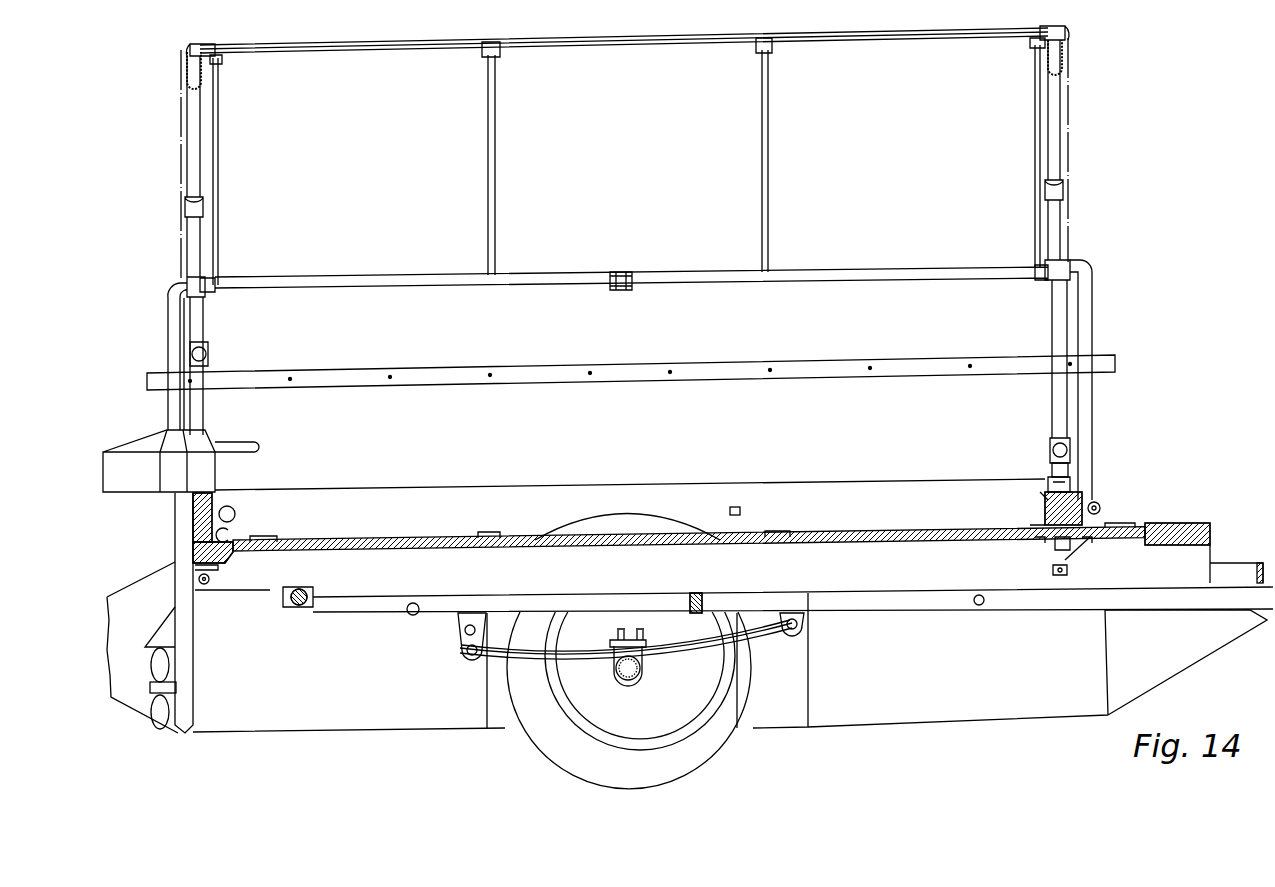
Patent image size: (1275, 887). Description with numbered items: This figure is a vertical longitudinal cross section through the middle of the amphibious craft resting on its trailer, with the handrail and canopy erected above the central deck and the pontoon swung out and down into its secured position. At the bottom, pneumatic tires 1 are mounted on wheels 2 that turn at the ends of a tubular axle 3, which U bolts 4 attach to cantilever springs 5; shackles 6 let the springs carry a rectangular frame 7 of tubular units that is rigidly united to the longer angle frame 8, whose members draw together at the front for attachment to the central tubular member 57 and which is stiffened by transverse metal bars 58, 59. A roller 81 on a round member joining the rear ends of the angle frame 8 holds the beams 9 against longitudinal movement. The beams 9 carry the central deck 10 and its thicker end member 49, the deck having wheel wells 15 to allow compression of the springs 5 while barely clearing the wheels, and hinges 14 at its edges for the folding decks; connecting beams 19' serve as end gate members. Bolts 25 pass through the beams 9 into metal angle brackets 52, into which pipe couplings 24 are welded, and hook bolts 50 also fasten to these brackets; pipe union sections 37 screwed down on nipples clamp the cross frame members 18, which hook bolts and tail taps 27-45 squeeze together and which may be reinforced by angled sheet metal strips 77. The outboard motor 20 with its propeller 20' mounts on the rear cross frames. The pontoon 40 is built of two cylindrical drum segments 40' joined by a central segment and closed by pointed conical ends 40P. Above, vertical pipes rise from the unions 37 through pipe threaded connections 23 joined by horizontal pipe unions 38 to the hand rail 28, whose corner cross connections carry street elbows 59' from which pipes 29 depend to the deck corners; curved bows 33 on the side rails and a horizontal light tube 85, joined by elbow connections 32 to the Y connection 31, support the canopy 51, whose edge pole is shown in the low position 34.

The pneumatic tire 1 is at (623, 0).
The wheel 2 is at (640, 681).
The tubular axle 3 is at (628, 668).
The U bolt 4 is at (633, 657).
The cantilever spring 5 is at (626, 639).
The shackle 6 is at (631, 626).
The rectangular frame 7 is at (695, 605).
The angle frame 8 is at (778, 587).
The beam 9 is at (636, 581).
The central deck 10 is at (689, 539).
The hinge 14 is at (702, 523).
The wheel well 15 is at (627, 527).
The cross frame member 18 is at (627, 517).
The connecting beam 19' is at (739, 506).
The outboard motor 20 is at (181, 461).
The propeller 20' is at (149, 688).
The pipe threaded connection 23 is at (185, 205).
The pipe coupling 24 is at (1062, 550).
The bolt 25 is at (632, 581).
The tail tap and hook bolt 27-45 is at (1114, 506).
The hand rail 28 is at (250, 288).
The pipe 29 is at (168, 350).
The Y connection 31 is at (186, 77).
The elbow connection 32 is at (210, 50).
The curved bow 33 is at (218, 145).
The canopy edge pole position 34 is at (631, 372).
The pipe union 37 is at (1052, 477).
The horizontal pipe union 38 is at (208, 350).
The pontoon 40 is at (641, 613).
The cylindrical drum segment 40' is at (647, 656).
The conical end 40P is at (143, 613).
The end member 49 is at (701, 535).
The hook bolt 50 is at (652, 542).
The canopy 51 is at (638, 40).
The metal angle bracket 52 is at (648, 560).
The central tubular member 57 is at (1256, 596).
The transverse metal bar 58 is at (1196, 575).
The transverse metal bar 59 is at (704, 603).
The street elbow 59' is at (632, 273).
The angled strip of sheet metal 77 is at (1034, 491).
The roller 81 is at (312, 612).
The horizontal light tube 85 is at (650, 48).